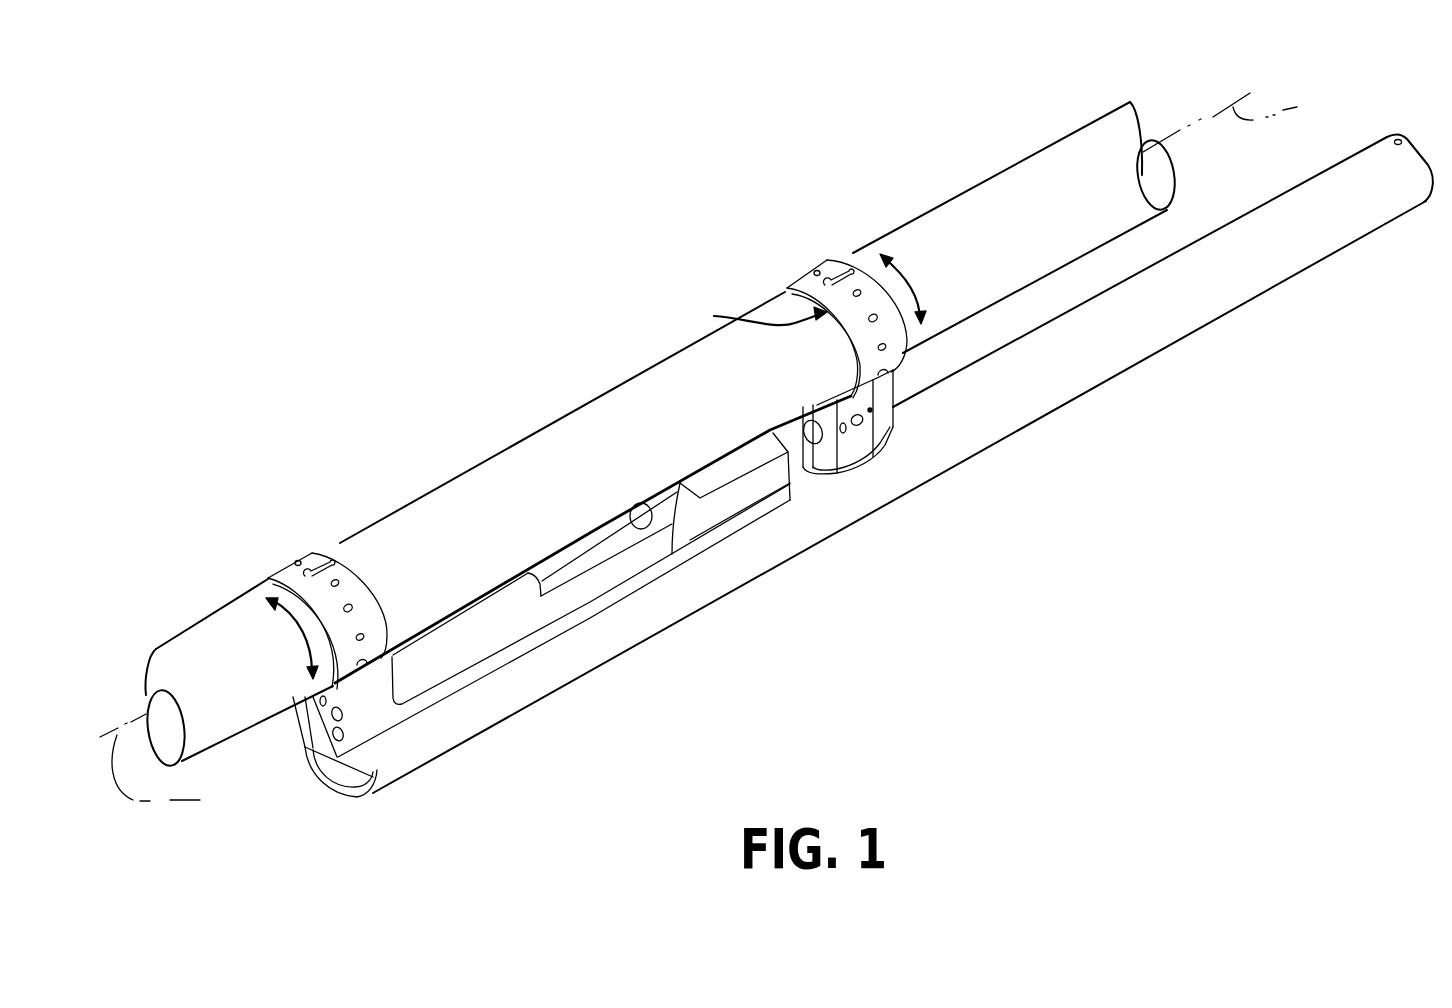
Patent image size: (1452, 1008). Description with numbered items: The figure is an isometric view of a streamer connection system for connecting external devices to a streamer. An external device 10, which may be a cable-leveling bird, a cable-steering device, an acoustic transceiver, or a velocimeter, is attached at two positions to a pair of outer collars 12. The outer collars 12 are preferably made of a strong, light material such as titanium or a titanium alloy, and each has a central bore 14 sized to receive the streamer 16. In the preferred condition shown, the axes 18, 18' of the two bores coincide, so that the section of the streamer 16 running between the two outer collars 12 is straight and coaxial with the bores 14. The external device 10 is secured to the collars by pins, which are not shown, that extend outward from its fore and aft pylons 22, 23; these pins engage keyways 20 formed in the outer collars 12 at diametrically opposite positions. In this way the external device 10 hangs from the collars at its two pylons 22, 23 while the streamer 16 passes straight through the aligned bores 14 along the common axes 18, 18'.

The external device 10 is at (1043, 403).
The outer collar 12 is at (290, 572).
The central bore 14 is at (757, 317).
The streamer 16 is at (1048, 167).
The axis 18 is at (165, 766).
The axis 18' is at (1238, 122).
The keyway 20 is at (848, 261).
The fore pylon 22 is at (360, 710).
The aft pylon 23 is at (857, 452).